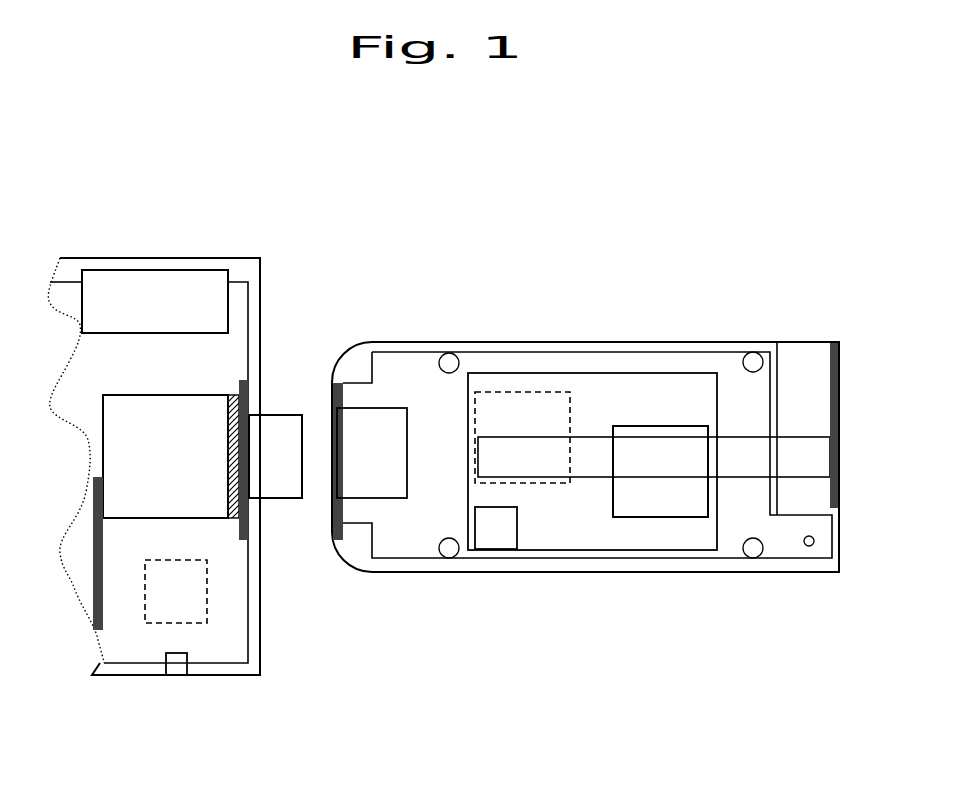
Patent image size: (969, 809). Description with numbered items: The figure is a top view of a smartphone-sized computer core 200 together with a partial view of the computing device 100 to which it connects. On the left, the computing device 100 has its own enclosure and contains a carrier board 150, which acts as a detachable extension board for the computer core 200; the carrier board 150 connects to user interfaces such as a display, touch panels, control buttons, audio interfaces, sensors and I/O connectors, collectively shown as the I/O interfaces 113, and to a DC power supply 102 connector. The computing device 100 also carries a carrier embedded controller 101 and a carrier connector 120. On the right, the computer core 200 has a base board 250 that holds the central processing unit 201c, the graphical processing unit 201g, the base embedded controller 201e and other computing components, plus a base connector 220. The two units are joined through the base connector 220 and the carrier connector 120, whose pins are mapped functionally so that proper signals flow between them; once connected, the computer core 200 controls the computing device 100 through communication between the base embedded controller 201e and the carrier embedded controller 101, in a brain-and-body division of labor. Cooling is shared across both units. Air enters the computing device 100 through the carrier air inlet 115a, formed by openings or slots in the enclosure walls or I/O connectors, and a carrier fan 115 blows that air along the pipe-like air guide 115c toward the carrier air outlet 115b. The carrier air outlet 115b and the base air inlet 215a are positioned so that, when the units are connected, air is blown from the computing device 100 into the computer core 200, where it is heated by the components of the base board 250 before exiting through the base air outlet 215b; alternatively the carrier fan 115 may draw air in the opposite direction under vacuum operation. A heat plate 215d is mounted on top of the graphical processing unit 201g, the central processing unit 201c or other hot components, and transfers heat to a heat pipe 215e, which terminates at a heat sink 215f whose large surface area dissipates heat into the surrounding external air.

The computing device 100 is at (175, 258).
The carrier board 150 is at (248, 350).
The I/O interfaces 113 is at (155, 301).
The carrier fan 115 is at (165, 456).
The carrier air inlet 115a is at (94, 588).
The carrier air outlet 115b is at (242, 527).
The air guide 115c is at (227, 500).
The carrier connector 120 is at (275, 456).
The carrier embedded controller 101 is at (176, 591).
The DC power supply 102 is at (177, 663).
The computer core 200 is at (612, 342).
The base board 250 is at (423, 352).
The base connector 220 is at (372, 453).
The graphical processing unit 201g is at (538, 392).
The central processing unit 201c is at (653, 426).
The base embedded controller 201e is at (495, 528).
The base air inlet 215a is at (333, 510).
The base air outlet 215b is at (830, 497).
The heat plate 215d is at (533, 553).
The heat pipe 215e is at (592, 478).
The heat sink 215f is at (790, 353).